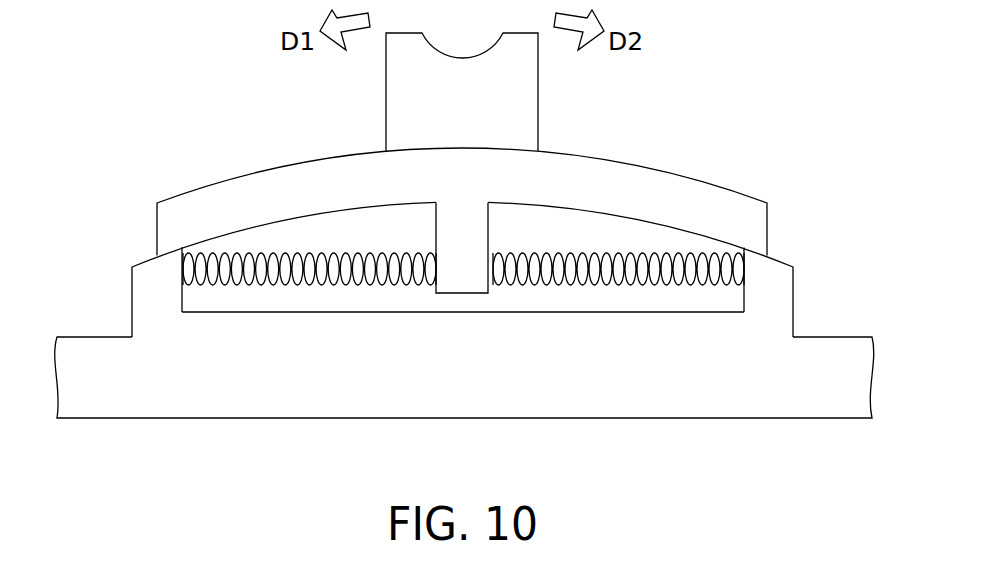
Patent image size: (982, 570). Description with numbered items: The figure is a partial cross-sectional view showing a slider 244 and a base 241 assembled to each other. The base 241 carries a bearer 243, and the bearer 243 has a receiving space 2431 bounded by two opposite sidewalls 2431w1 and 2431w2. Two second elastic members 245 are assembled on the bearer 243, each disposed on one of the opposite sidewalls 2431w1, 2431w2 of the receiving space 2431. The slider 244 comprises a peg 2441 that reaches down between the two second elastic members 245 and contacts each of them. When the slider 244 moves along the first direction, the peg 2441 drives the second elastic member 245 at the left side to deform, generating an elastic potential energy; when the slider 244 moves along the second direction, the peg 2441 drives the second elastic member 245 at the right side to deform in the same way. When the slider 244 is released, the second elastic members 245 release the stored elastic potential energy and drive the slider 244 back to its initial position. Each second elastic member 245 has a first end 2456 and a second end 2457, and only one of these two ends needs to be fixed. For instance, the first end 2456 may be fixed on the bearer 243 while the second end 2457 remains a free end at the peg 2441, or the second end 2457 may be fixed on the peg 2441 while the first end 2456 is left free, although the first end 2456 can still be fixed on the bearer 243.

The base 241 is at (820, 390).
The bearer 243 is at (496, 335).
The receiving space 2431 is at (462, 357).
The sidewall 2431w1 is at (183, 306).
The sidewall 2431w2 is at (742, 290).
The slider 244 is at (462, 198).
The peg 2441 is at (470, 228).
The second elastic member 245 is at (307, 283).
The first end 2456 is at (193, 287).
The second end 2457 is at (430, 283).